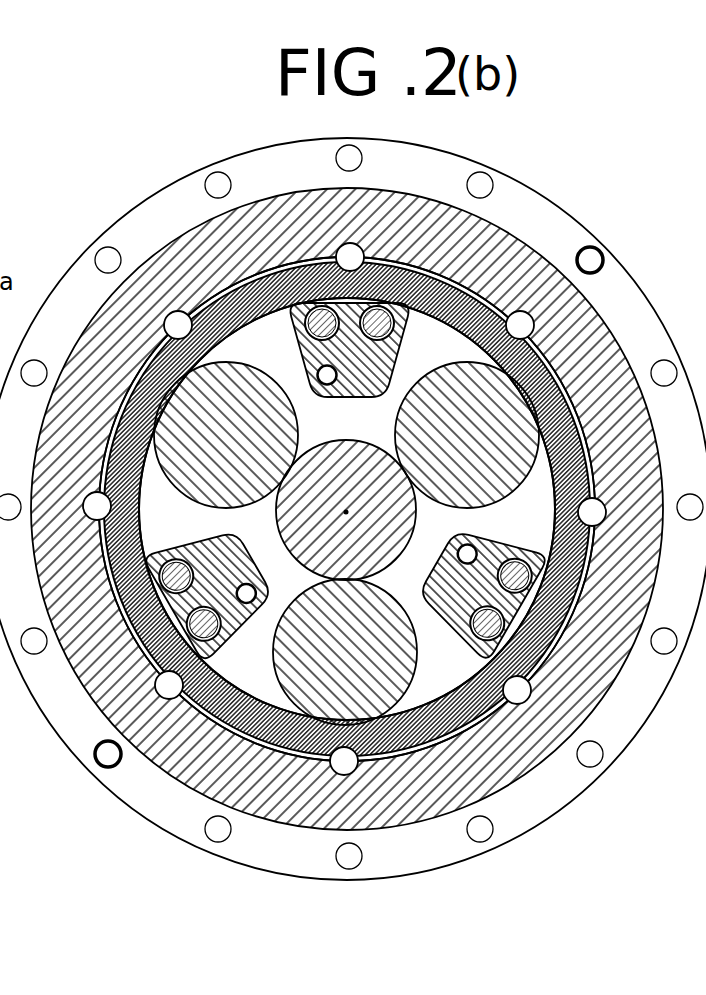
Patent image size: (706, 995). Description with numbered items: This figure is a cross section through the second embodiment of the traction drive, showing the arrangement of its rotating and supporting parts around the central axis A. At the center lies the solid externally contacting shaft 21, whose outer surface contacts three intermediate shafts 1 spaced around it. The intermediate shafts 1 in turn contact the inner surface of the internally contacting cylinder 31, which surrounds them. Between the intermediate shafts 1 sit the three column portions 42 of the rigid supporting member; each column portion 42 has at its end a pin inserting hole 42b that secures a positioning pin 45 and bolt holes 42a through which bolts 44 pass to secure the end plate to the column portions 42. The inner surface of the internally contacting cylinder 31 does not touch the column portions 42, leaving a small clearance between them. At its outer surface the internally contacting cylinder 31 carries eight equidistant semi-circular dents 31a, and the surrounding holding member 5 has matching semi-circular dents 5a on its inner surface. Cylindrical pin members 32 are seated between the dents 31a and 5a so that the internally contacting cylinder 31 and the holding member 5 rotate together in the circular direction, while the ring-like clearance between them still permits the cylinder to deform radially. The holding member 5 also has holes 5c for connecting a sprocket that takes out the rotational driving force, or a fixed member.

The intermediate shaft 1 is at (407, 660).
The holding member 5 is at (540, 740).
The semi-circular dent 5a is at (332, 765).
The hole 5c is at (480, 840).
The externally contacting shaft 21 is at (300, 546).
The internally contacting cylinder 31 is at (556, 518).
The semi-circular dent 31a is at (168, 688).
The pin member 32 is at (136, 502).
The column portion 42 is at (366, 394).
The bolt hole 42a is at (318, 326).
The pin inserting hole 42b is at (244, 607).
The bolt 44 is at (385, 328).
The positioning pin 45 is at (324, 386).
The center axis A is at (348, 512).